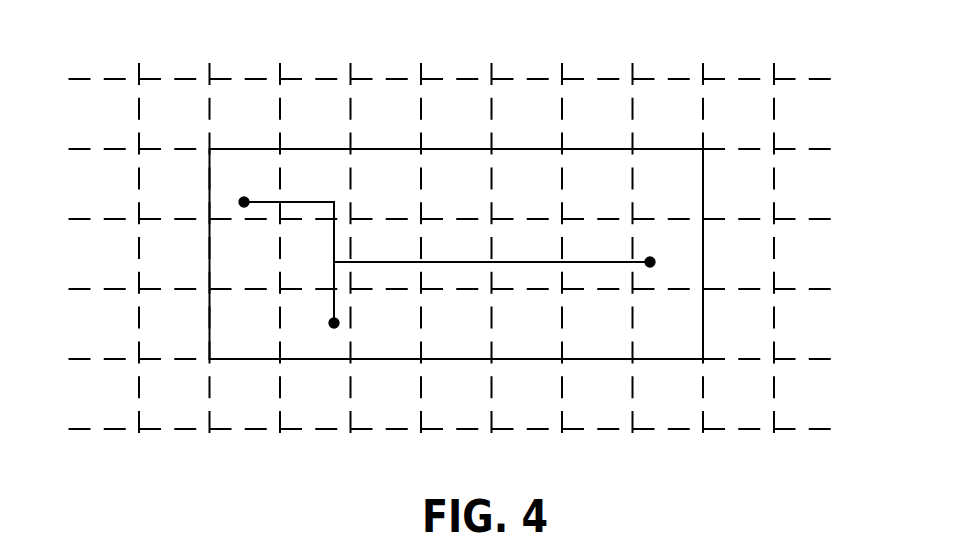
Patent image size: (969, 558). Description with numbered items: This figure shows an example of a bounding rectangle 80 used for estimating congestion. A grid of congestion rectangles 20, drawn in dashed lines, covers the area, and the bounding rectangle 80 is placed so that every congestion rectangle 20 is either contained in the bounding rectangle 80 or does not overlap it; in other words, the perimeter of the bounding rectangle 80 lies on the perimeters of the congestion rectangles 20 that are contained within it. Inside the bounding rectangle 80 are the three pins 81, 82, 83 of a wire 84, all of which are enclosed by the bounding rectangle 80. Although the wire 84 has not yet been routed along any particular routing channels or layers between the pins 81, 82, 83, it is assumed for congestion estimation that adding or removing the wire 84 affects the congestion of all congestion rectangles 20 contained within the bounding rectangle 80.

The congestion rectangle 20 is at (387, 182).
The bounding rectangle 80 is at (708, 181).
The pin 81 is at (244, 202).
The pin 82 is at (334, 323).
The pin 83 is at (650, 262).
The wire 84 is at (509, 248).